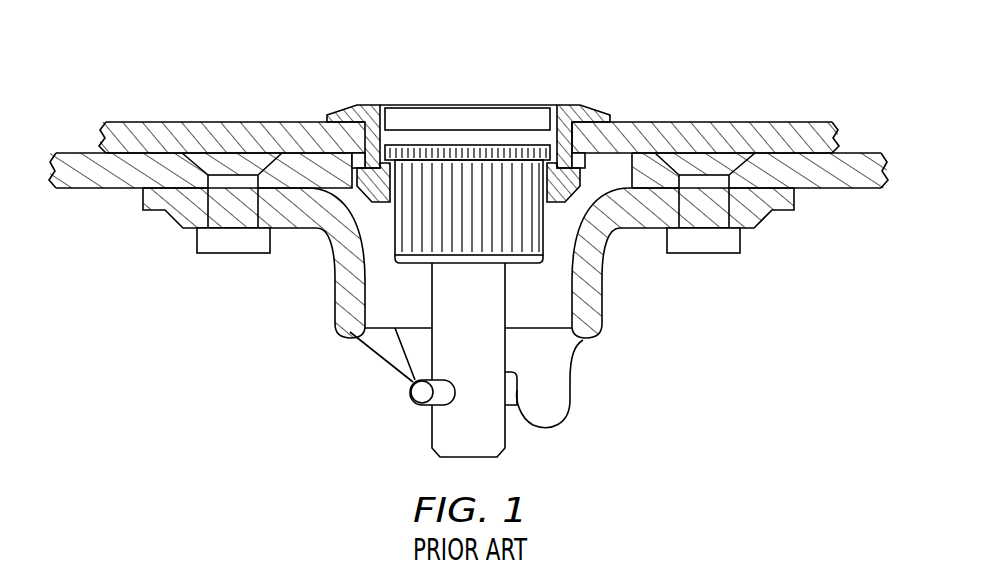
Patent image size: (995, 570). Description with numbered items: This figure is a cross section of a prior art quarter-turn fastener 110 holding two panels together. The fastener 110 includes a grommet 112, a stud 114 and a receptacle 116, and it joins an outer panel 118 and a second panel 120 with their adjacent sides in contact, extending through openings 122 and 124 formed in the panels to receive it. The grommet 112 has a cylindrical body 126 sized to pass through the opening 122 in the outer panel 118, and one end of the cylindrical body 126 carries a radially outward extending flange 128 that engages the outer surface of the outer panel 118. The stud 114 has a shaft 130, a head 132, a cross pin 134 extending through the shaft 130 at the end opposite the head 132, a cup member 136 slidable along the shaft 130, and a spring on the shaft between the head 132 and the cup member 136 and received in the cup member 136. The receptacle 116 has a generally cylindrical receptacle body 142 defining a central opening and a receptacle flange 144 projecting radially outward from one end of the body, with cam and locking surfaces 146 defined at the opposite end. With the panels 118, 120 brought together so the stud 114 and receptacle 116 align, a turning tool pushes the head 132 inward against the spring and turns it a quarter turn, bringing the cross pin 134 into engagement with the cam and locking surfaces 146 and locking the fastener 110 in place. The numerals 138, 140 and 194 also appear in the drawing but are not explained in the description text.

The fastener 110 is at (195, 70).
The grommet 112 is at (338, 100).
The stud 114 is at (537, 277).
The receptacle 116 is at (317, 250).
The outer panel 118 is at (194, 130).
The panel 120 is at (107, 188).
The opening 122 is at (590, 150).
The opening 124 is at (612, 167).
The cylindrical body 126 is at (398, 178).
The radially outward extending flange 128 is at (576, 135).
The shaft 130 is at (453, 315).
The head 132 is at (530, 145).
The cross pin 134 is at (415, 395).
The cup member 136 is at (455, 137).
The cap 138 is at (386, 165).
The threaded body 140 is at (475, 187).
The receptacle body 142 is at (350, 290).
The receptacle flange 144 is at (183, 205).
The cam and locking surfaces 146 is at (517, 390).
The nut 194 is at (220, 255).